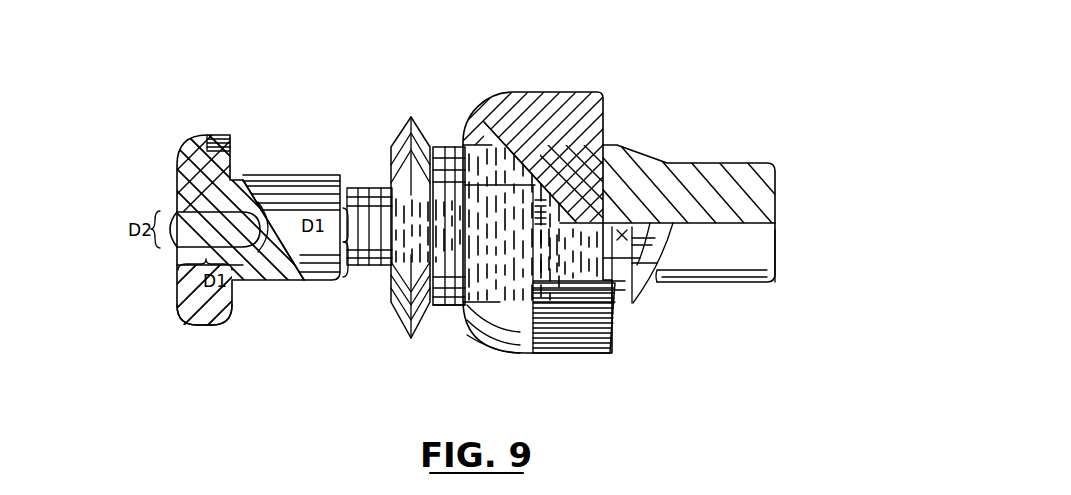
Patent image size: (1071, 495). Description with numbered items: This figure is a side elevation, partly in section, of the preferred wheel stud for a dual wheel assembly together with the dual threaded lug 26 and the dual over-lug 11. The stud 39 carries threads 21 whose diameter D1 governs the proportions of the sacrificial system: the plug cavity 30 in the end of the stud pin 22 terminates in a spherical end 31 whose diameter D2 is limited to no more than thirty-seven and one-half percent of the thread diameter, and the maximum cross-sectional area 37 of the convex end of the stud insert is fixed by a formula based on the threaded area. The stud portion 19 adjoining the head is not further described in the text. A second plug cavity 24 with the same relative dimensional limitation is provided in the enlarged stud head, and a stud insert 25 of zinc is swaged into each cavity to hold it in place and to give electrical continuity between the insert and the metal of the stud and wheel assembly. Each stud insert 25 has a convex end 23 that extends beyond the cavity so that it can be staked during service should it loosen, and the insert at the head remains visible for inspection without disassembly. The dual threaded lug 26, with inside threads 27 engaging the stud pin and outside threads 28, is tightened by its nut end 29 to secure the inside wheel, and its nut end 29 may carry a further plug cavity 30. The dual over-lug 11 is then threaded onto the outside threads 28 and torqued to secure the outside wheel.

The dual over-lug 11 is at (615, 352).
The bolt shank 19 is at (287, 175).
The threads 21 is at (360, 187).
The end of the stud pin 22 is at (620, 203).
The convex end of the stud insert 23 is at (172, 213).
The plug cavity 24 is at (207, 203).
The stud insert 25 is at (177, 252).
The dual threaded lug 26 is at (402, 122).
The inside threads 27 is at (455, 307).
The outside threads 28 is at (448, 147).
The nut end 29 is at (772, 285).
The plug cavity 30 is at (590, 126).
The spherical end 31 is at (258, 282).
The maximum cross-sectional area 37 is at (170, 240).
The stud 39 is at (242, 335).